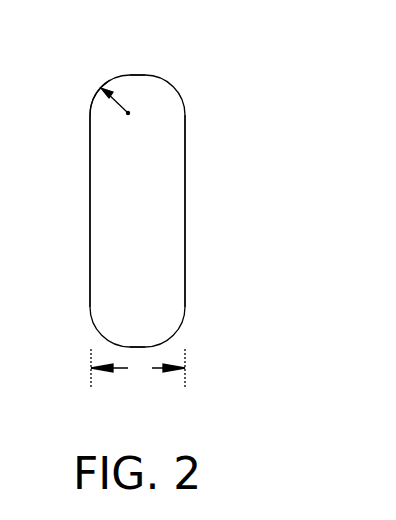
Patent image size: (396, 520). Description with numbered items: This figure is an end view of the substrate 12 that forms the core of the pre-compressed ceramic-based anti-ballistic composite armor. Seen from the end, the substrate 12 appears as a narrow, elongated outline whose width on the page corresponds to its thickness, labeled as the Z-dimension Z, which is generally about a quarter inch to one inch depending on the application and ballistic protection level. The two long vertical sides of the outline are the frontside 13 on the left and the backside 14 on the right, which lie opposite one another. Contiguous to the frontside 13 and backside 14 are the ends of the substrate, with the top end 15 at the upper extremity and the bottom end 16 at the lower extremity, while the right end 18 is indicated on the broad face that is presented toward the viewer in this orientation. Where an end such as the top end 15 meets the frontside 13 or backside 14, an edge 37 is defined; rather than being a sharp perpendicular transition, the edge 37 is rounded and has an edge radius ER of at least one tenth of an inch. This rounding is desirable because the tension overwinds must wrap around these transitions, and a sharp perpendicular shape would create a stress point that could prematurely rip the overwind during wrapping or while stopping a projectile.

The substrate 12 is at (250, 97).
The frontside 13 is at (90, 202).
The backside 14 is at (185, 213).
The top end 15 is at (137, 75).
The bottom end 16 is at (138, 345).
The right end 18 is at (157, 203).
The edge 37 is at (100, 88).
The edge radius ER is at (133, 108).
The thickness (Z-dimension) Z is at (138, 368).